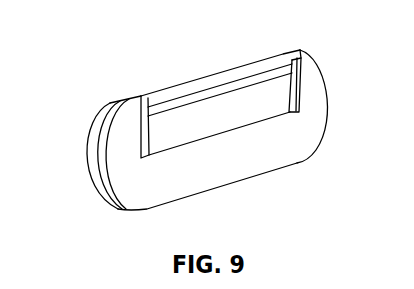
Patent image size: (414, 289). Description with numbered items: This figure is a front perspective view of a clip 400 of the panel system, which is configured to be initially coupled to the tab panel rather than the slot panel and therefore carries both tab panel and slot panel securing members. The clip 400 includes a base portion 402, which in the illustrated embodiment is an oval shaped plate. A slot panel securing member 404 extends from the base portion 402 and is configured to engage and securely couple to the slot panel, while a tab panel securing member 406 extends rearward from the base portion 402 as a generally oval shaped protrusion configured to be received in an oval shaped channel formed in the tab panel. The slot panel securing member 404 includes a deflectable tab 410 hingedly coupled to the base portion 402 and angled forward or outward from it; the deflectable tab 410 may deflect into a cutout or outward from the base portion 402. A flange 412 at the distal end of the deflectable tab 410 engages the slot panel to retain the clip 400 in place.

The clip 400 is at (184, 52).
The base portion 402 is at (106, 195).
The slot panel securing member 404 is at (239, 103).
The tab panel securing member 406 is at (92, 158).
The deflectable tab 410 is at (149, 127).
The flange 412 is at (177, 88).